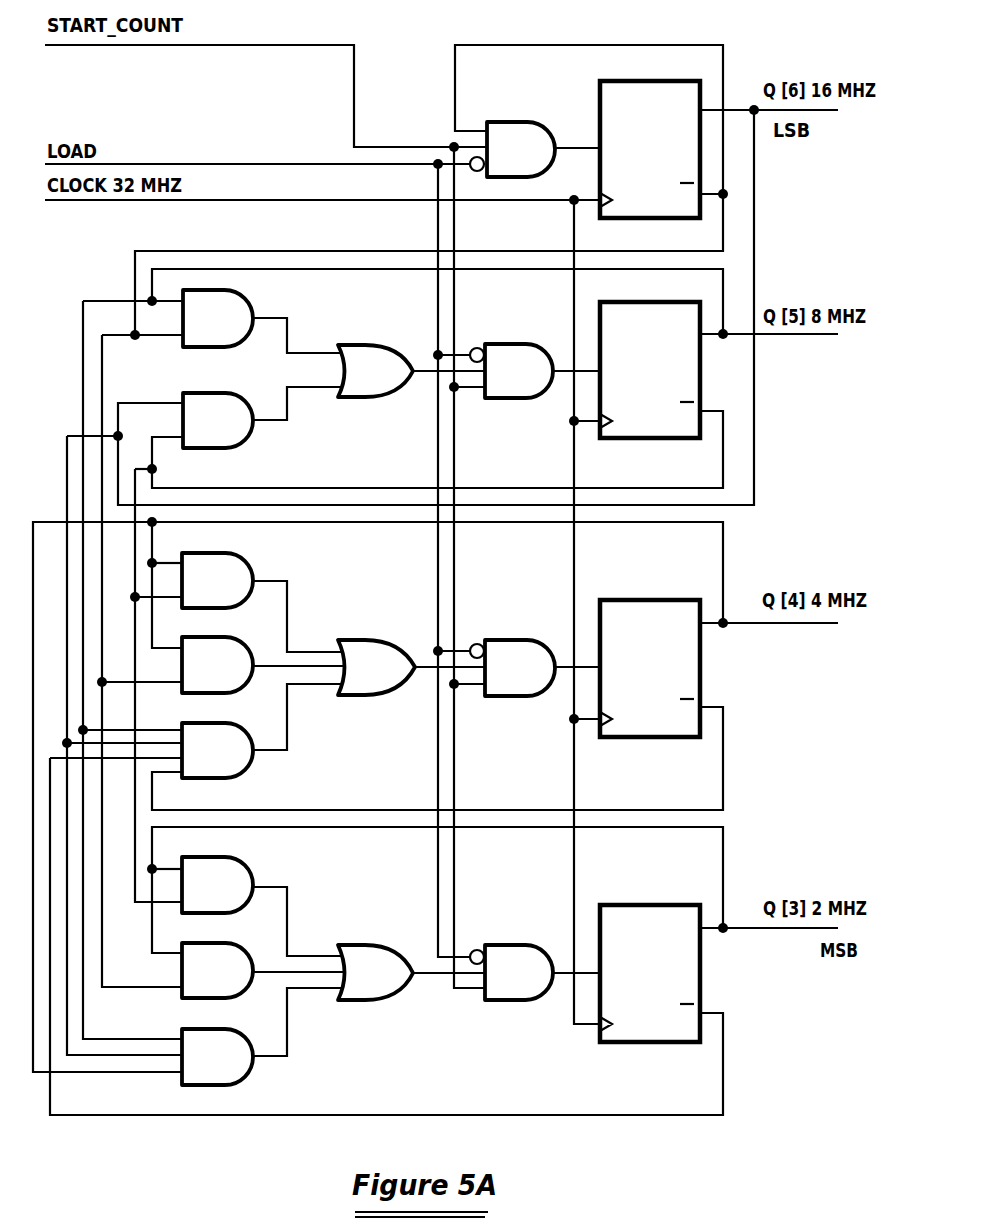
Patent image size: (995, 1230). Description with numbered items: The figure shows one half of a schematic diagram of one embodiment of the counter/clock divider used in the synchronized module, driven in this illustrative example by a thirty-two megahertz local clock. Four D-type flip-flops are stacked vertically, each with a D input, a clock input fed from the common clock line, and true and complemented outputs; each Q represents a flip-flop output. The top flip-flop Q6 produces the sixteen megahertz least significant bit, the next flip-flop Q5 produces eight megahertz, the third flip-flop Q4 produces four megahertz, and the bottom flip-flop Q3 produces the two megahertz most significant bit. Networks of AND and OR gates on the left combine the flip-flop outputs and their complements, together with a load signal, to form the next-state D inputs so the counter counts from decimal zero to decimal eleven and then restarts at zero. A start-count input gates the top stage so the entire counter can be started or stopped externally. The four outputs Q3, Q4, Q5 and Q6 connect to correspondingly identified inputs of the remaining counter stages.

The flip-flop output Q[6] Q6 is at (650, 149).
The flip-flop output Q[5] Q5 is at (650, 370).
The flip-flop output Q[4] Q4 is at (650, 668).
The flip-flop output Q[3] Q3 is at (650, 973).